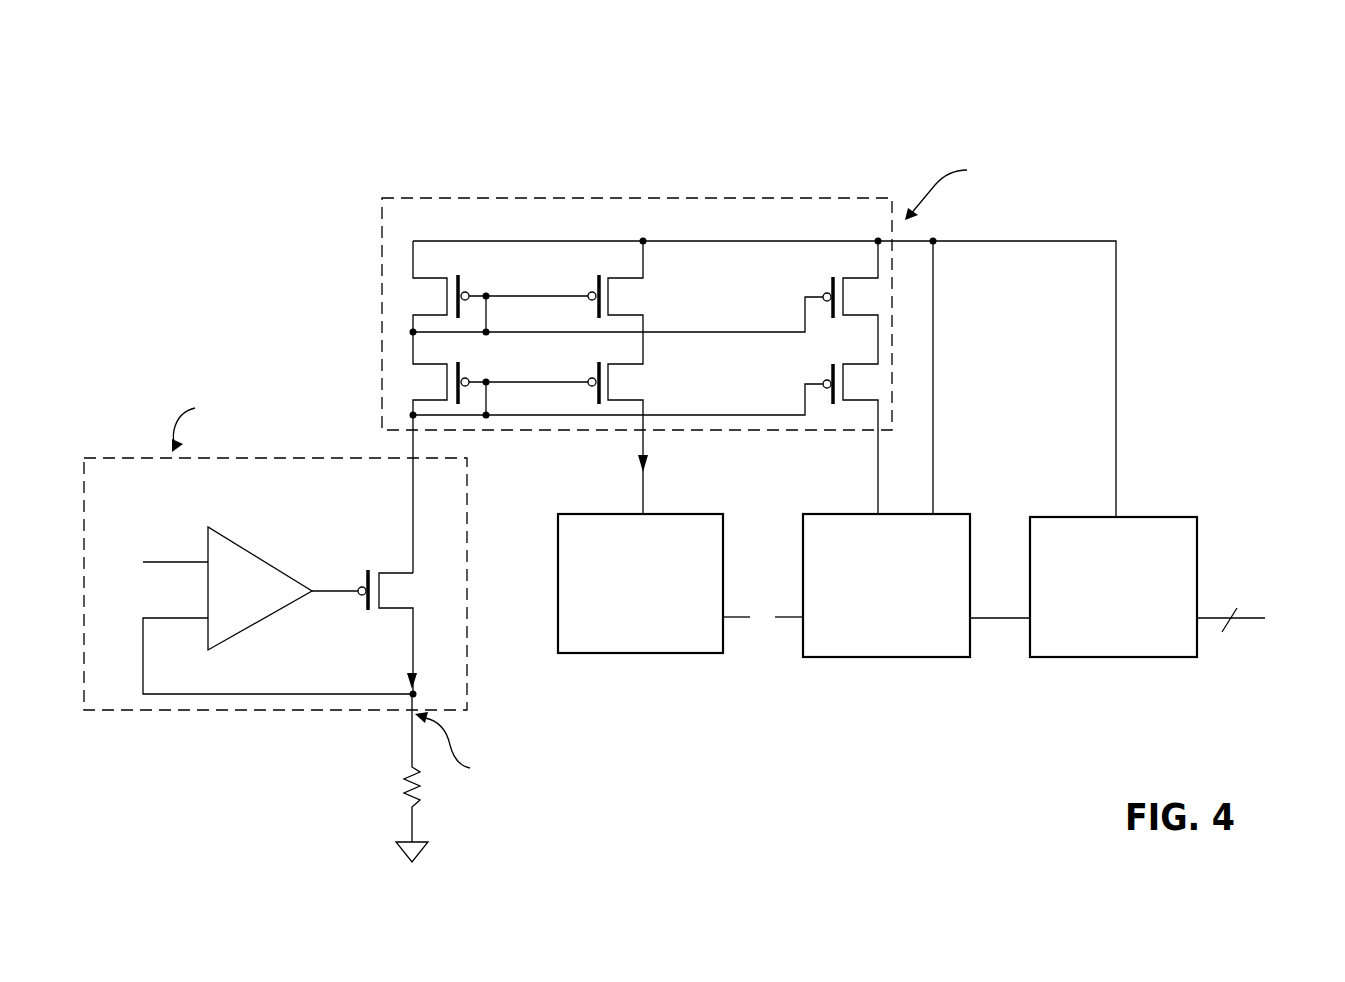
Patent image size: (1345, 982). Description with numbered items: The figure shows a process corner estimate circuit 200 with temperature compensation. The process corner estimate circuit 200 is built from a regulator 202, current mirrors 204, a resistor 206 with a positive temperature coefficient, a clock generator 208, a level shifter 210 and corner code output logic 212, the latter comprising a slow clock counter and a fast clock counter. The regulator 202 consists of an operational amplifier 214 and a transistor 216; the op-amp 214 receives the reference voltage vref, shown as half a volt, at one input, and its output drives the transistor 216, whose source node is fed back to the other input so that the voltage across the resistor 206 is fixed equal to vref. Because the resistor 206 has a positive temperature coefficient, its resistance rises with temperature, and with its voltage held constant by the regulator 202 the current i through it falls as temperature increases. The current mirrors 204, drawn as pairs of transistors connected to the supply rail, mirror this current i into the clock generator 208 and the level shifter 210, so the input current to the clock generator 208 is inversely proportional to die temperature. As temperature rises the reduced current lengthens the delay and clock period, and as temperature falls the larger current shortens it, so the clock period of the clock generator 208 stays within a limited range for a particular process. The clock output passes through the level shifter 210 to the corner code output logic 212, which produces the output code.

The process corner estimate circuit 200 is at (1160, 122).
The regulator 202 is at (122, 470).
The current mirrors 204 is at (521, 210).
The resistor with positive temperature coefficient 206 is at (392, 808).
The clock generator 208 is at (678, 642).
The level shifter 210 is at (935, 645).
The corner code output logic 212 is at (1172, 522).
The operational amplifier 214 is at (257, 568).
The transistor 216 is at (385, 626).